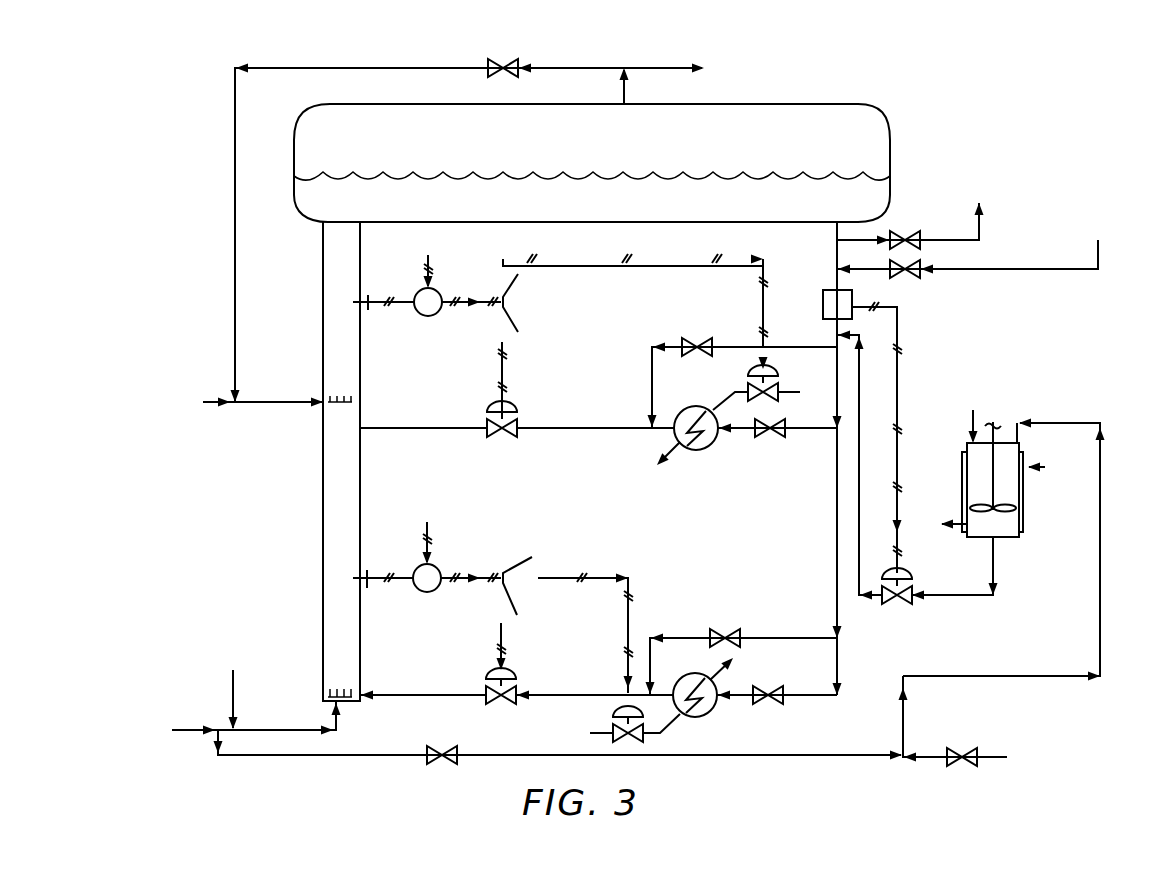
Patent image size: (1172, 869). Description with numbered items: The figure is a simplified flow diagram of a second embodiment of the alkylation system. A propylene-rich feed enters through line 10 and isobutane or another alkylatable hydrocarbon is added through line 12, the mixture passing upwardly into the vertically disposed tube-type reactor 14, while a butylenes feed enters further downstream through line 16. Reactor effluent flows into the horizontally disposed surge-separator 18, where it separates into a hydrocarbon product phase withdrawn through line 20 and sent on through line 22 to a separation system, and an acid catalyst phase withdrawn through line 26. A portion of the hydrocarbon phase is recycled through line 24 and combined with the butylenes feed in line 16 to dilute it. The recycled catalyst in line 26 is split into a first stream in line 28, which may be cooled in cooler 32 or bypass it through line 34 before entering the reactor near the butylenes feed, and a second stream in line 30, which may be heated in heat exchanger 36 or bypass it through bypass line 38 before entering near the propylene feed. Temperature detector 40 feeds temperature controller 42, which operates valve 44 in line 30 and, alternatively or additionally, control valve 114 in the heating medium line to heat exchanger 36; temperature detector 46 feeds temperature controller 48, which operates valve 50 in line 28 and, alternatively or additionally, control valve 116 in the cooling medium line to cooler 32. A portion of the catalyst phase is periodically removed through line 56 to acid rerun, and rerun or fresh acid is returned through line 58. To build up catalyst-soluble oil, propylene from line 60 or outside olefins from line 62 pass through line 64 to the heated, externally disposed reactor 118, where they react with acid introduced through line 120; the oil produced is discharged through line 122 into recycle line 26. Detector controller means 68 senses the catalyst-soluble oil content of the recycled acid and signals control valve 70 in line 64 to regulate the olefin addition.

The line 10 is at (256, 730).
The line 12 is at (233, 708).
The tube-type reactor 14 is at (360, 498).
The line 16 is at (226, 404).
The surge-separator 18 is at (606, 158).
The line 20 is at (625, 96).
The line 22 is at (660, 67).
The line 24 is at (406, 66).
The line 26 is at (837, 262).
The line 28 is at (455, 430).
The line 30 is at (420, 697).
The cooler 32 is at (716, 443).
The line 34 is at (713, 347).
The heat exchanger 36 is at (714, 712).
The bypass line 38 is at (742, 636).
The temperature detector 40 is at (353, 578).
The temperature controller 42 is at (441, 567).
The valve 44 is at (489, 686).
The temperature detector 46 is at (353, 302).
The temperature controller 48 is at (442, 290).
The valve 50 is at (489, 416).
The line 56 is at (968, 240).
The line 58 is at (1040, 270).
The line 60 is at (556, 755).
The line 62 is at (930, 758).
The line 64 is at (1100, 545).
The detector controller means 68 is at (823, 302).
The control valve 70 is at (888, 606).
The control valve 114 is at (614, 722).
The control valve 116 is at (748, 380).
The reactor 118 is at (1023, 496).
The line 120 is at (973, 422).
The line 122 is at (990, 597).